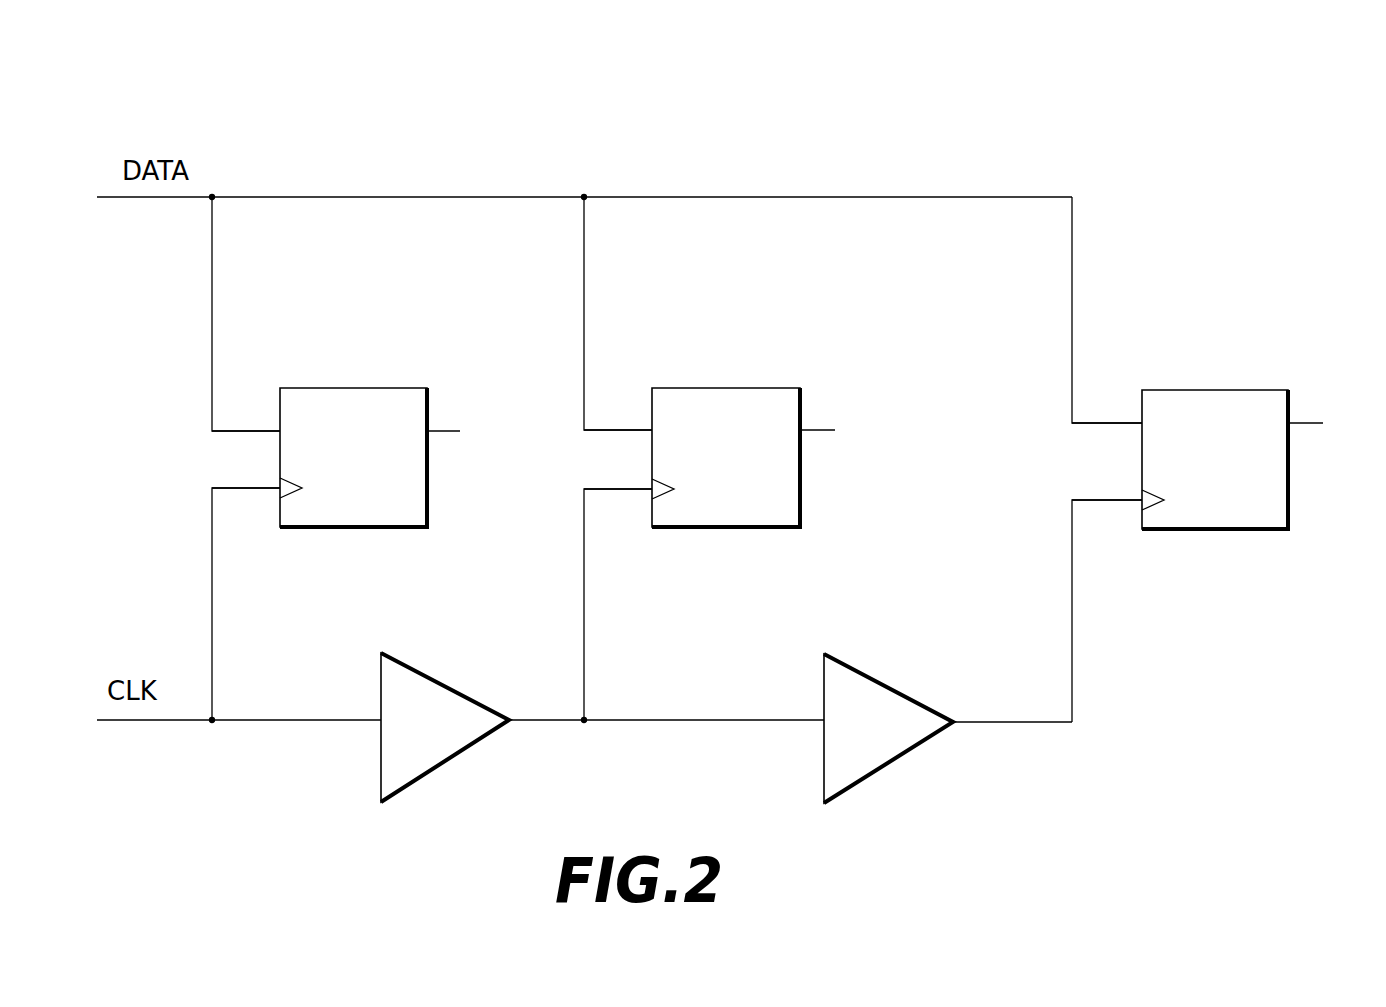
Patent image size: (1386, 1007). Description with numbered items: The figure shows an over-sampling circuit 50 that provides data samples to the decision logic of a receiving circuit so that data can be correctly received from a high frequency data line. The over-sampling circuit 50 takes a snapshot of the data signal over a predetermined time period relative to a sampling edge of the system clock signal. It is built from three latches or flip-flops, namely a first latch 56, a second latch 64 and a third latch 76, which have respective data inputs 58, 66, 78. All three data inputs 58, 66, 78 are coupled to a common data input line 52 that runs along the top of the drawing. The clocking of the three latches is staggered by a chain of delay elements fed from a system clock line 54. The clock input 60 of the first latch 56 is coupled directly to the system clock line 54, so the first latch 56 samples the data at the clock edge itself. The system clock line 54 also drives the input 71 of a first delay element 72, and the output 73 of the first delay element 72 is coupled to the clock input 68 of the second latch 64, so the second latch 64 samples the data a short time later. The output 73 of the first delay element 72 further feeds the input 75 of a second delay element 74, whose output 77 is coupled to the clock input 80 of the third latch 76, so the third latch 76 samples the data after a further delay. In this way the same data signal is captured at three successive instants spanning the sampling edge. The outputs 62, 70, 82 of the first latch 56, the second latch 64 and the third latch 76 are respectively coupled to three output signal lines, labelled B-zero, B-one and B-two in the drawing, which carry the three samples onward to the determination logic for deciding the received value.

The over-sampling circuit 50 is at (672, 148).
The data input line 52 is at (364, 197).
The system clock line 54 is at (263, 722).
The first latch 56 is at (353, 388).
The data input of first latch 58 is at (280, 431).
The clock input of first latch 60 is at (282, 488).
The output of first latch 62 is at (428, 431).
The second latch 64 is at (730, 388).
The data input of second latch 66 is at (652, 430).
The clock input of second latch 68 is at (655, 489).
The output of second latch 70 is at (801, 430).
The input of first delay element 71 is at (380, 718).
The first delay element 72 is at (425, 676).
The output of first delay element 73 is at (512, 718).
The second delay element 74 is at (885, 682).
The input of second delay element 75 is at (822, 722).
The third latch 76 is at (1196, 390).
The output of second delay element 77 is at (958, 722).
The data input of third latch 78 is at (1142, 423).
The clock input of third latch 80 is at (1145, 500).
The output of third latch 82 is at (1290, 423).